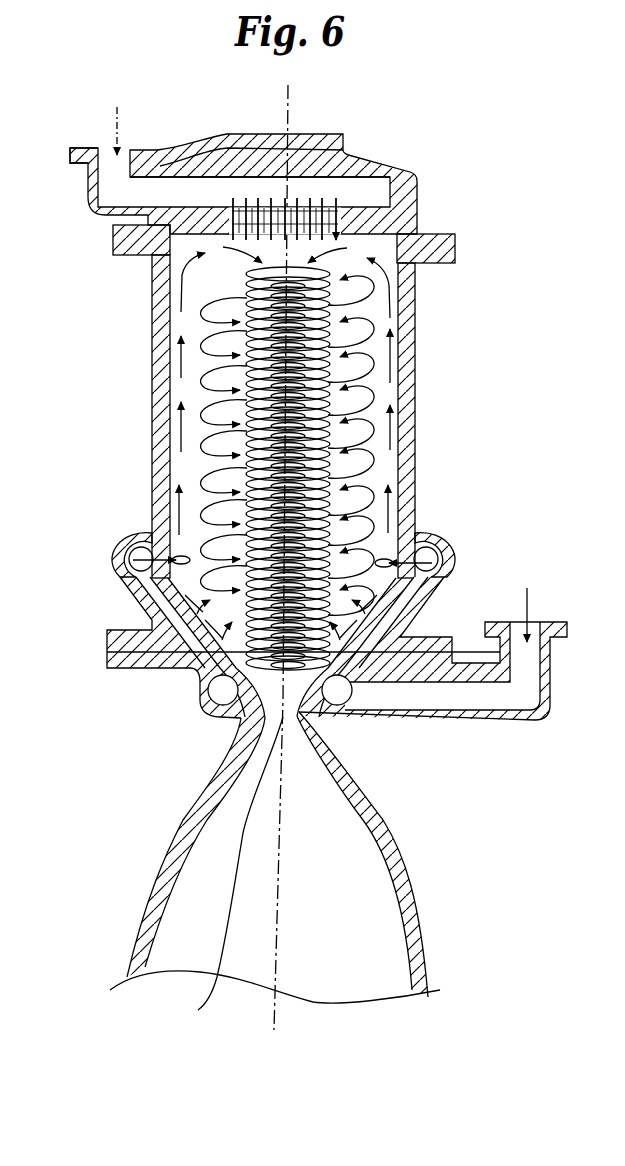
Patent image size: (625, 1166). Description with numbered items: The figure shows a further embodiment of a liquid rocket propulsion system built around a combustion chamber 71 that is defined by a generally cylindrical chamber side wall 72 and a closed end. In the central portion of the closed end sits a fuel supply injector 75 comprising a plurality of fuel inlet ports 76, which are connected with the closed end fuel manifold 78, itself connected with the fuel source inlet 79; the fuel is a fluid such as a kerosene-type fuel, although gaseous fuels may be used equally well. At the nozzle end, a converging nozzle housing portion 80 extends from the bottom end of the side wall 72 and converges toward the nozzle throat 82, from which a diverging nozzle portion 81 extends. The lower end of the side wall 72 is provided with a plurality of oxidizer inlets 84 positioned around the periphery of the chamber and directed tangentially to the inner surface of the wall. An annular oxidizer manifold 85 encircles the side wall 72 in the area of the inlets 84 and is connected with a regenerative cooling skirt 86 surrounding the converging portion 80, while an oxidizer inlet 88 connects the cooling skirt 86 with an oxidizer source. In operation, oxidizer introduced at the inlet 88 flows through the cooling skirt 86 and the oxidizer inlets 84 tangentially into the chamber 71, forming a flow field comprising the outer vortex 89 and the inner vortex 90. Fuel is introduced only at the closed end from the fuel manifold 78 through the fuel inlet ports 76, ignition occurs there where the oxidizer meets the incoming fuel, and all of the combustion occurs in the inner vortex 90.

The combustion chamber 71 is at (383, 285).
The chamber side wall 72 is at (410, 333).
The fuel supply injector 75 is at (352, 202).
The fuel inlet ports 76 is at (309, 210).
The fuel manifold 78 is at (232, 186).
The fuel source inlet 79 is at (76, 151).
The converging nozzle housing portion 80 is at (352, 642).
The diverging nozzle portion 81 is at (407, 926).
The nozzle throat 82 is at (226, 871).
The oxidizer inlets 84 is at (400, 550).
The annular oxidizer manifold 85 is at (434, 548).
The regenerative cooling skirt 86 is at (412, 612).
The oxidizer inlet 88 is at (551, 653).
The outer vortex 89 is at (348, 387).
The inner vortex 90 is at (332, 412).